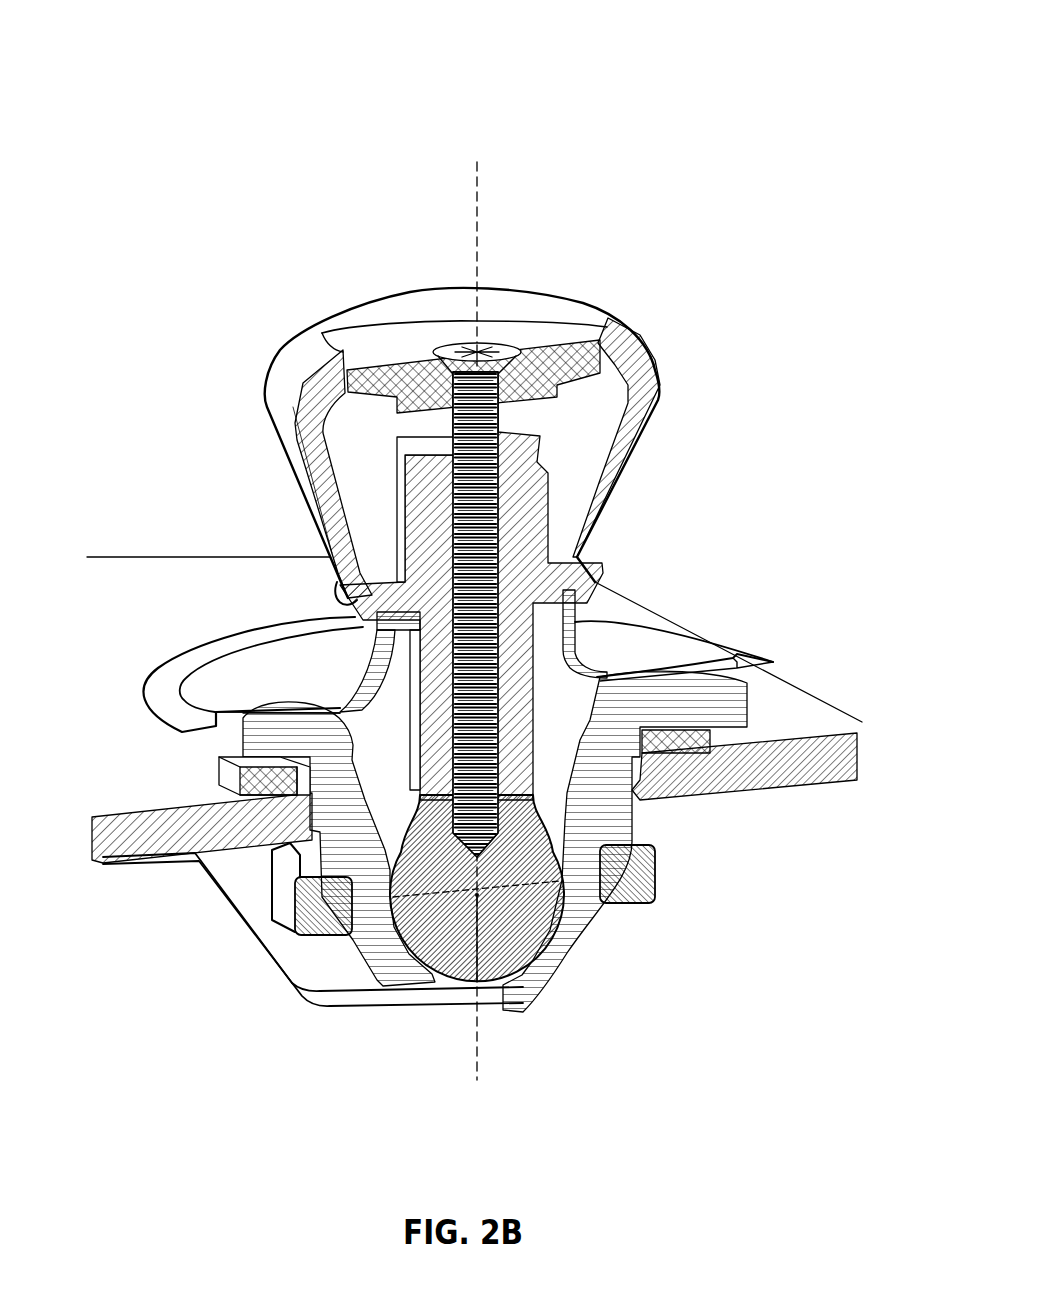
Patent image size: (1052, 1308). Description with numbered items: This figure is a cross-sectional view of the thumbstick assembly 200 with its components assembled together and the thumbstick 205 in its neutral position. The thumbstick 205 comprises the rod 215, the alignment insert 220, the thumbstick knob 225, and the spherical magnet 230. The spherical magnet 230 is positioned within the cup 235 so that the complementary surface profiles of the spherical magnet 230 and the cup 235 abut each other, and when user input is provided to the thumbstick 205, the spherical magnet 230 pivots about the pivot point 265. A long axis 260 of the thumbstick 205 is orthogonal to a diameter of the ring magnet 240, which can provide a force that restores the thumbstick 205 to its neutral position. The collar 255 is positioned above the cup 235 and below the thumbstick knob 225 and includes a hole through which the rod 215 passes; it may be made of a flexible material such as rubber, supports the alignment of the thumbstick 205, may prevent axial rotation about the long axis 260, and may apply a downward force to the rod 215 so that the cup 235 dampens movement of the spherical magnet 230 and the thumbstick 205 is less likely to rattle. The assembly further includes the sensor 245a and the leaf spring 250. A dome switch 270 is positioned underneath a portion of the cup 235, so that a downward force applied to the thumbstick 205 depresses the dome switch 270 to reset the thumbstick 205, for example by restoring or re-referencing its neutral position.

The thumbstick assembly 200 is at (309, 49).
The thumbstick 205 is at (565, 263).
The rod 215 is at (497, 527).
The alignment insert 220 is at (590, 356).
The thumbstick knob 225 is at (310, 415).
The spherical magnet 230 is at (500, 942).
The cup 235 is at (697, 710).
The ring magnet 240 is at (643, 888).
The sensor 245a is at (240, 778).
The leaf spring 250 is at (270, 962).
The collar 255 is at (640, 648).
The long axis 260 is at (472, 222).
The pivot point 265 is at (477, 895).
The dome switch 270 is at (682, 742).